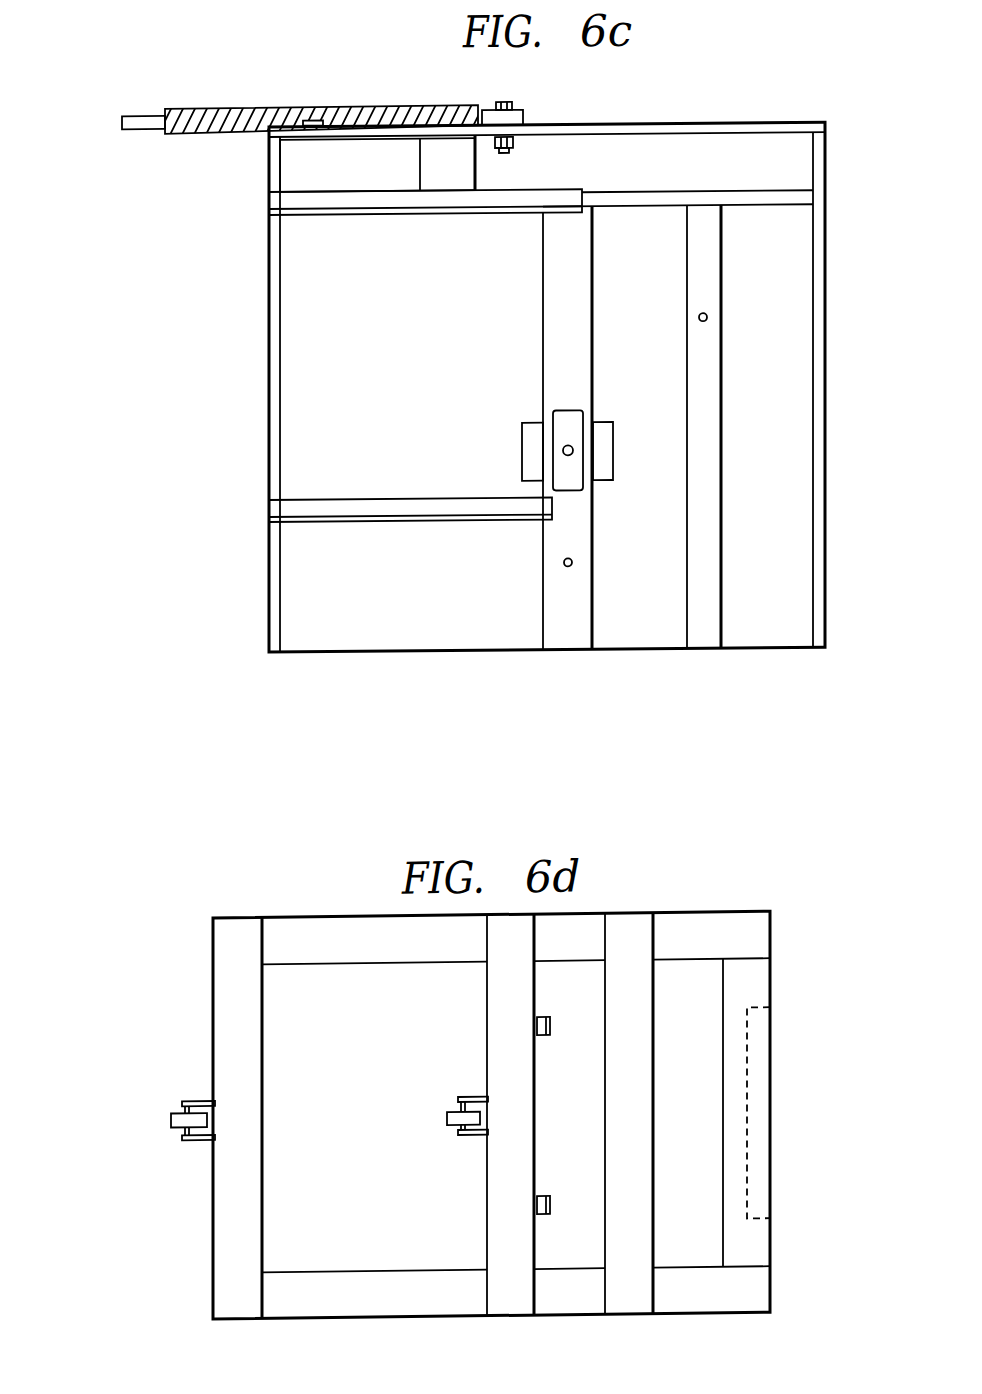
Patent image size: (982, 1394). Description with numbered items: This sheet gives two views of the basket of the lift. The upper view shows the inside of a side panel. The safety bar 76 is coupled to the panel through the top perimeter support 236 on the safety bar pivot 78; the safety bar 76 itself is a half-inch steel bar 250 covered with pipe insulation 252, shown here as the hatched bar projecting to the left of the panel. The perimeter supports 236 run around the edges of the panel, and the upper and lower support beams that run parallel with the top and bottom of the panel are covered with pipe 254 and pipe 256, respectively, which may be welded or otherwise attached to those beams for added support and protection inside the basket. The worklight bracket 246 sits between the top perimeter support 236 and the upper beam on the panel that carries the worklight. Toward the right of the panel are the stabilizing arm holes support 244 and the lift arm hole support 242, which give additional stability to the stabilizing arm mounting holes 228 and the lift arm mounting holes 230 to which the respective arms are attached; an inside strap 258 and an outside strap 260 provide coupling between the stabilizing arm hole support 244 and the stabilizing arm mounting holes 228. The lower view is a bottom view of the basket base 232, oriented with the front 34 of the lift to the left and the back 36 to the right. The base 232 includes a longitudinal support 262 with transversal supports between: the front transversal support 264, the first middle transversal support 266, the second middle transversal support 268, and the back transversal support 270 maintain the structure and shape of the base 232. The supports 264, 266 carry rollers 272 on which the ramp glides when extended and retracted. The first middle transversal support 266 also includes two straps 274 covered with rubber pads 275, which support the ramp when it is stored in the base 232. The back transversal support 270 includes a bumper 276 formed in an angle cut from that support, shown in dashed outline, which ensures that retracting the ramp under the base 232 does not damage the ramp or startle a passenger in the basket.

In FIG. 6D, the front 34 is at (113, 1052).
In FIG. 6D, the back 36 is at (868, 1050).
In FIG. 6C, the safety bar 76 is at (352, 90).
In FIG. 6C, the safety bar pivot 78 is at (521, 109).
In FIG. 6C, the stabilizing arm mounting holes 228 is at (574, 453).
In FIG. 6C, the lift arm mounting holes 230 is at (708, 321).
In FIG. 6D, the basket base 232 is at (697, 880).
In FIG. 6C, the perimeter supports 236 is at (736, 128).
In FIG. 6C, the lift arm hole support 242 is at (723, 452).
In FIG. 6C, the stabilizing arm holes support 244 is at (594, 282).
In FIG. 6C, the worklight bracket 246 is at (477, 168).
In FIG. 6C, the steel bar 250 is at (143, 114).
In FIG. 6C, the pipe insulation 252 is at (220, 108).
In FIG. 6C, the pipe 254 is at (358, 216).
In FIG. 6C, the pipe 256 is at (340, 500).
In FIG. 6C, the inside strap 258 is at (606, 425).
In FIG. 6C, the outside strap 260 is at (572, 494).
In FIG. 6D, the longitudinal support 262 is at (295, 922).
In FIG. 6D, the front transversal support 264 is at (220, 1240).
In FIG. 6D, the first middle transversal support 266 is at (488, 1020).
In FIG. 6D, the second middle transversal support 268 is at (654, 1022).
In FIG. 6D, the back transversal support 270 is at (764, 992).
In FIG. 6D, the rollers 272 is at (185, 1142).
In FIG. 6D, the straps 274 is at (552, 1042).
In FIG. 6D, the rubber pads 275 is at (551, 1027).
In FIG. 6D, the bumper 276 is at (760, 1218).